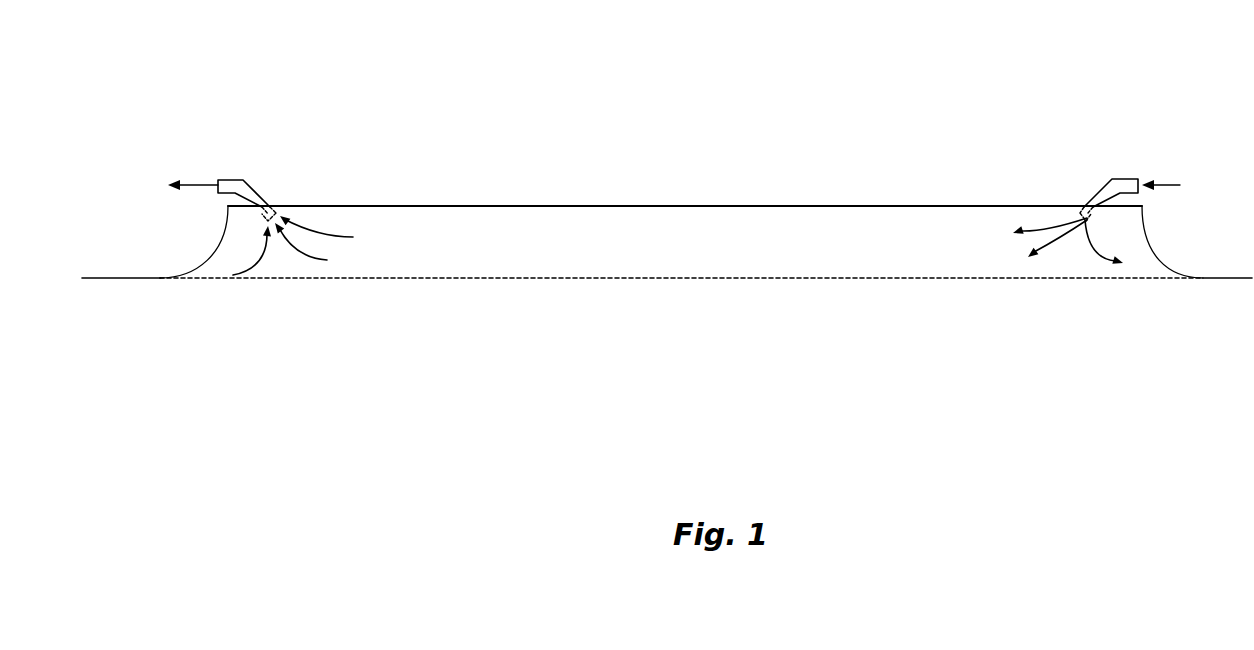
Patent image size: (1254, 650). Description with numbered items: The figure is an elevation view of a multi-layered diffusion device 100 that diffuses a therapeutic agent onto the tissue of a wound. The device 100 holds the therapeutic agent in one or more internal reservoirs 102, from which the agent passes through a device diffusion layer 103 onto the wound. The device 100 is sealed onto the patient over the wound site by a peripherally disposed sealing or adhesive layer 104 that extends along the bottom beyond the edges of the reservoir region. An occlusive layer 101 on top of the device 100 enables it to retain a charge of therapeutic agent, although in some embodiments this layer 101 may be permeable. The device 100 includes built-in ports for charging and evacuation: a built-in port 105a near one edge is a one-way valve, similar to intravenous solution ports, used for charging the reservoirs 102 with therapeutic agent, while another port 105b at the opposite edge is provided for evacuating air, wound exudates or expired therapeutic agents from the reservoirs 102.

The multi-layered diffusion device 100 is at (572, 112).
The occlusive layer 101 is at (748, 205).
The internal reservoir 102 is at (475, 245).
The device diffusion layer 103 is at (703, 277).
The peripherally disposed sealing or adhesive layer 104 is at (135, 278).
The built-in port 105a is at (1100, 188).
The port 105b is at (250, 187).